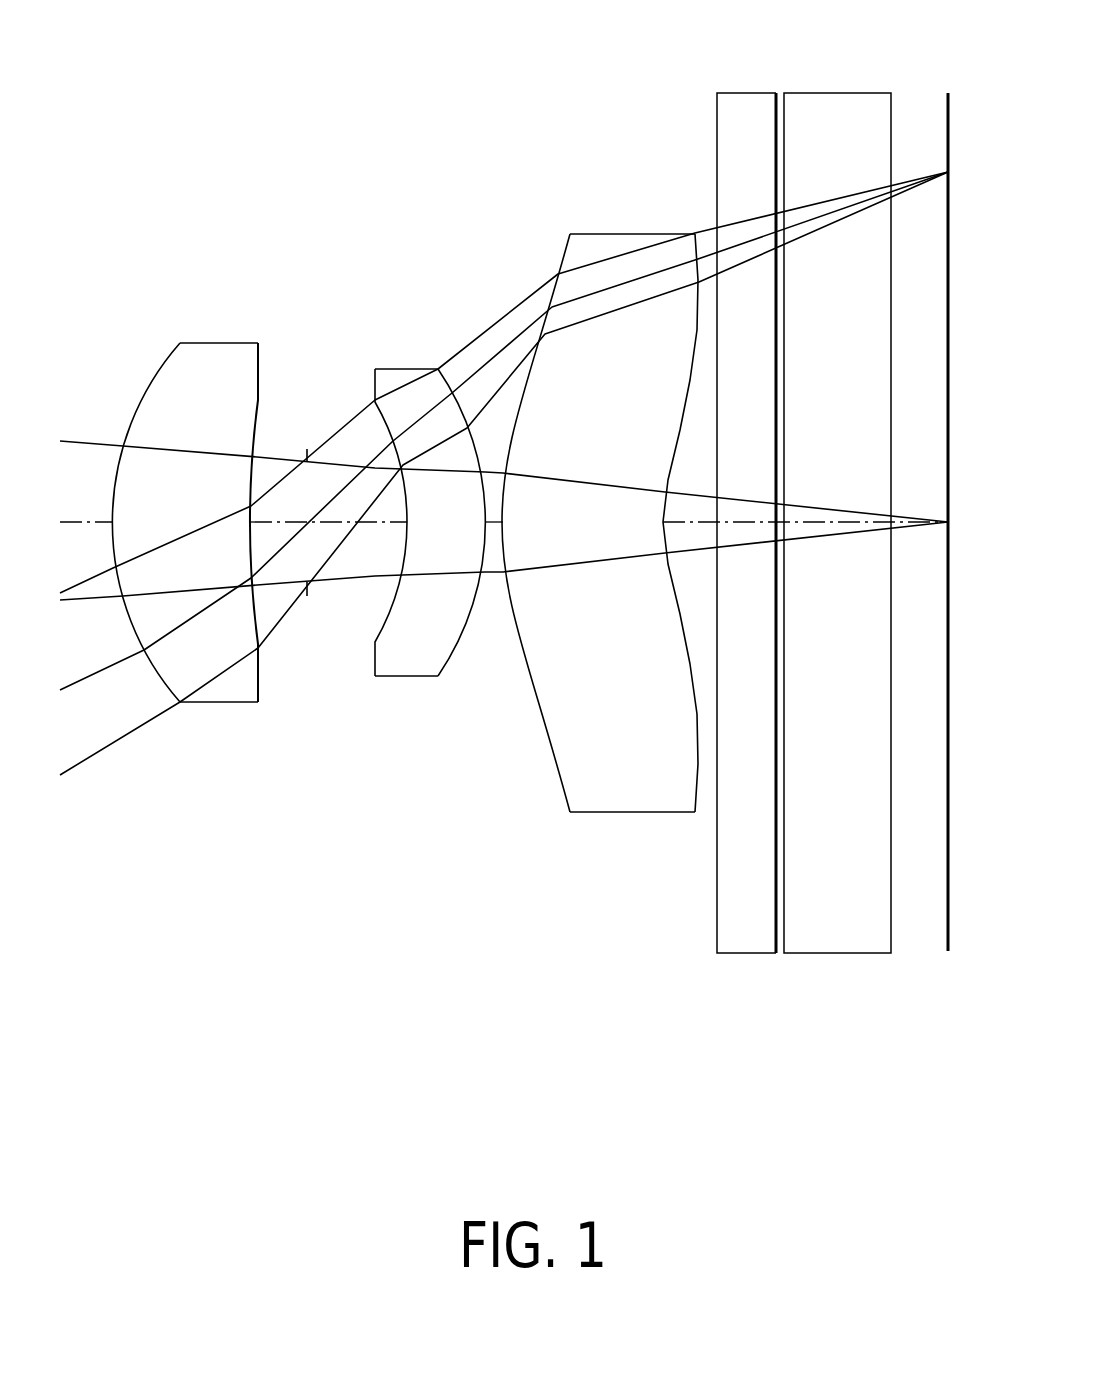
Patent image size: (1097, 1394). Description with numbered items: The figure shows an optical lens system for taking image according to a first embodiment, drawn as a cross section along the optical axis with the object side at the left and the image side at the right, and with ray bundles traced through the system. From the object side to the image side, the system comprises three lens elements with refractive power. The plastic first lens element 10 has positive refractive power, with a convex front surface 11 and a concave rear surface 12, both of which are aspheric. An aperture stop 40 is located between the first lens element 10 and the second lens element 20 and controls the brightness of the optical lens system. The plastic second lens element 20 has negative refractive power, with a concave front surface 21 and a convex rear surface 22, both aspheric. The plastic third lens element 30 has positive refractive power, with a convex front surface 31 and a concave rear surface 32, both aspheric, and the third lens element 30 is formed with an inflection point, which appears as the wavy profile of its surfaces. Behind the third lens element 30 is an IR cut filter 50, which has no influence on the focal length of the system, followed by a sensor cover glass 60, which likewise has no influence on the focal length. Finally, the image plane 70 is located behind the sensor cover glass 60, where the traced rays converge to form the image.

The first lens element 10 is at (177, 554).
The front surface of first lens element 11 is at (149, 682).
The rear surface of first lens element 12 is at (250, 626).
The second lens element 20 is at (432, 502).
The front surface of second lens element 21 is at (393, 626).
The rear surface of second lens element 22 is at (479, 621).
The third lens element 30 is at (600, 528).
The front surface of third lens element 31 is at (546, 754).
The rear surface of third lens element 32 is at (684, 694).
The aperture stop 40 is at (301, 428).
The IR cut filter 50 is at (752, 121).
The sensor cover glass 60 is at (833, 118).
The image plane 70 is at (942, 112).